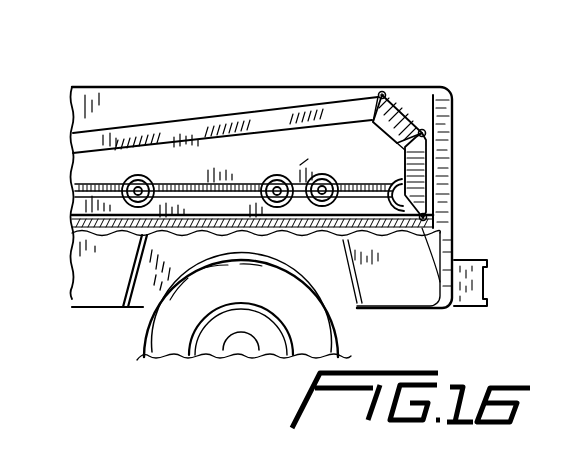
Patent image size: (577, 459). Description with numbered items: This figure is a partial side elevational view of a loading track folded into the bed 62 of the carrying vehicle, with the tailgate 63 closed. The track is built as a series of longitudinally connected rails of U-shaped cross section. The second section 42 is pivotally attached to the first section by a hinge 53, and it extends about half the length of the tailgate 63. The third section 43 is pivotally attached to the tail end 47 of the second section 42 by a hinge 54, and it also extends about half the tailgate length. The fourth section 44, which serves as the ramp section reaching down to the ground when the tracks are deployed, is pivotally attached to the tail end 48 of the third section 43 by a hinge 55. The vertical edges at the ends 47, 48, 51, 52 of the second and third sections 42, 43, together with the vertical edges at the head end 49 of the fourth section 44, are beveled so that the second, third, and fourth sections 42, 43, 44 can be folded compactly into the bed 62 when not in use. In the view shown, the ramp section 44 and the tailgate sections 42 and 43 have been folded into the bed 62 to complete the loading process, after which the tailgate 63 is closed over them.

The second section 42 is at (420, 163).
The third section 43 is at (407, 107).
The fourth section 44 is at (188, 128).
The tail end 47 is at (405, 147).
The tail end 48 is at (399, 98).
The head end 49 is at (375, 93).
The end 51 is at (425, 216).
The end 52 is at (424, 128).
The hinge 53 is at (460, 282).
The hinge 54 is at (425, 133).
The hinge 55 is at (380, 92).
The bed 62 is at (403, 287).
The tailgate 63 is at (442, 188).